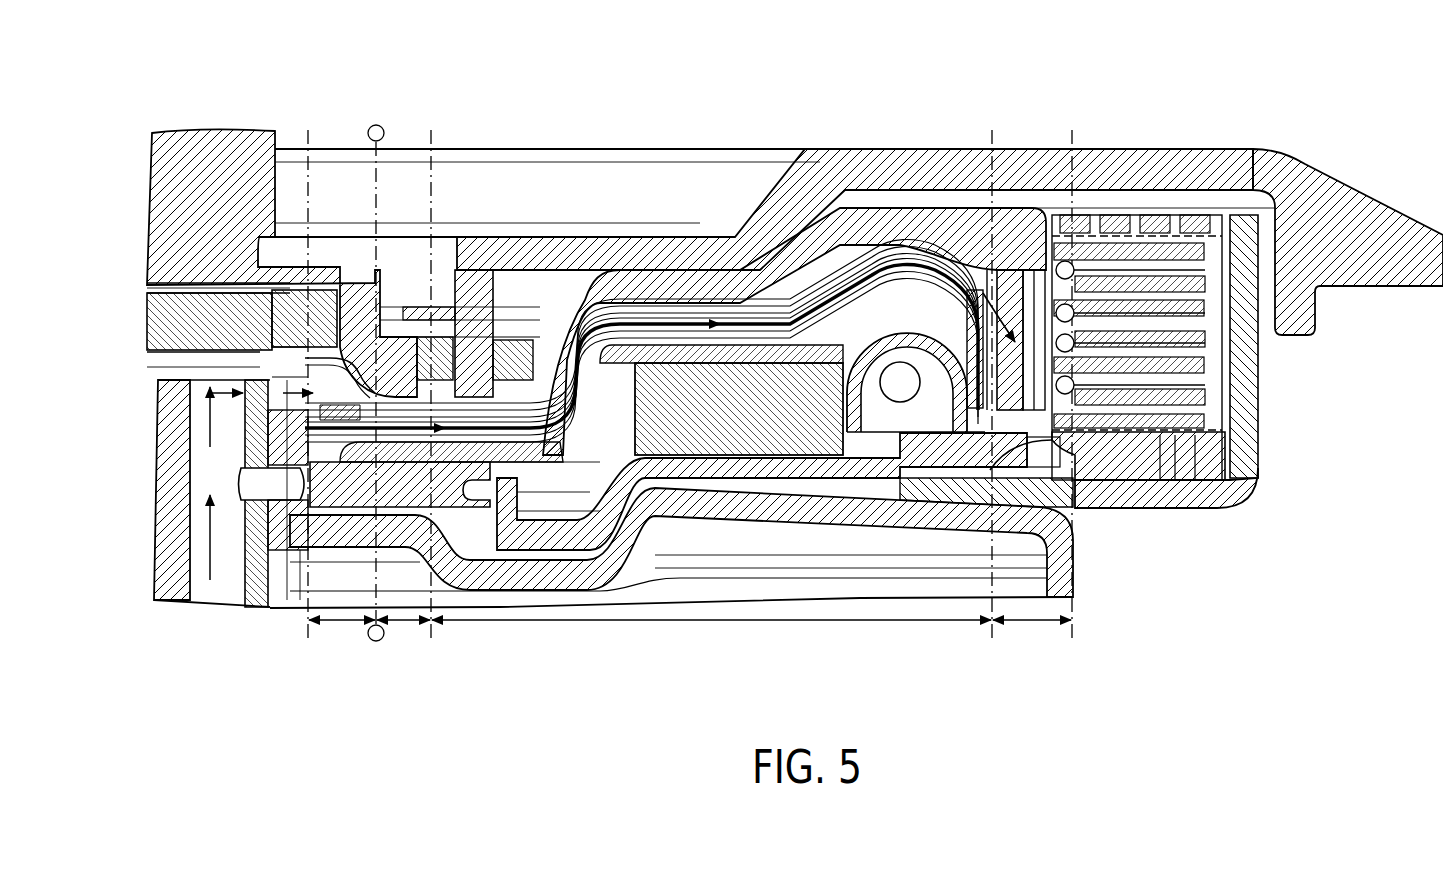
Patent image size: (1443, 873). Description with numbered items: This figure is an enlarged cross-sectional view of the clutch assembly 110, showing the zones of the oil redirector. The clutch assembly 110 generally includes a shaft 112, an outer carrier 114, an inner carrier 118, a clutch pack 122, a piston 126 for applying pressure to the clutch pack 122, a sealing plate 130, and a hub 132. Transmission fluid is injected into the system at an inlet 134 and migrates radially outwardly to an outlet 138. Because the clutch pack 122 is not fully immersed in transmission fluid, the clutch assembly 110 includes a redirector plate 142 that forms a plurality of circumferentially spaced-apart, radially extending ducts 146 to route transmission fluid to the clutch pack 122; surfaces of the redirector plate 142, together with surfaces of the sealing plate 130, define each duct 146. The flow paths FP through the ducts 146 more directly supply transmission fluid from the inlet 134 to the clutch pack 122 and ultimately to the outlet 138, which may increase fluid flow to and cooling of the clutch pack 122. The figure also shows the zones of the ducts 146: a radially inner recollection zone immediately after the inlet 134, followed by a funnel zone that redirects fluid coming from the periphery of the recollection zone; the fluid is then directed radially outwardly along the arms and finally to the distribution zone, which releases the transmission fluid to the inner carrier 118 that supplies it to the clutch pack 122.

The clutch assembly 110 is at (1228, 110).
The shaft 112 is at (232, 150).
The outer carrier 114 is at (1228, 493).
The inner carrier 118 is at (1017, 217).
The clutch pack 122 is at (1215, 360).
The piston 126 is at (1128, 467).
The sealing plate 130 is at (577, 362).
The hub 132 is at (162, 340).
The inlet 134 is at (272, 305).
The outlet 138 is at (1270, 337).
The redirector plate 142 is at (915, 255).
The ducts 146 is at (457, 427).
The flow paths FP is at (210, 552).